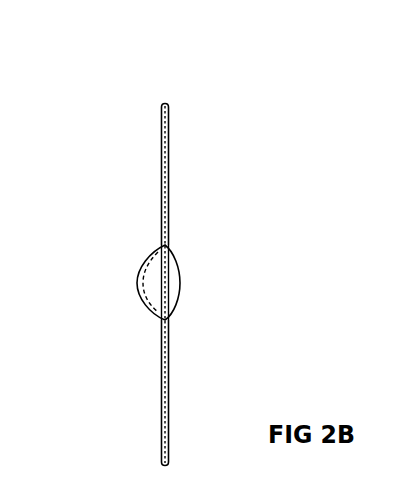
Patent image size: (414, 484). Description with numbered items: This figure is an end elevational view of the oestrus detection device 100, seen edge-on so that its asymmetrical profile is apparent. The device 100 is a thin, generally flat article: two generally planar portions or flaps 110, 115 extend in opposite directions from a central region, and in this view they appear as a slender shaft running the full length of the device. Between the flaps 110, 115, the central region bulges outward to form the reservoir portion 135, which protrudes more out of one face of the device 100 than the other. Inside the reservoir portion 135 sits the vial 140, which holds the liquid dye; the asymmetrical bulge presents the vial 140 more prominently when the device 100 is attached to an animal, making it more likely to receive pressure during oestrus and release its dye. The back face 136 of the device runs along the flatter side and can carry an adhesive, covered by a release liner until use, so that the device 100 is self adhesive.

The detection device 100 is at (238, 99).
The generally planar portion 110 is at (162, 163).
The generally planar portion 115 is at (163, 382).
The reservoir portion 135 is at (140, 273).
The back face 136 is at (173, 209).
The vial 140 is at (148, 307).